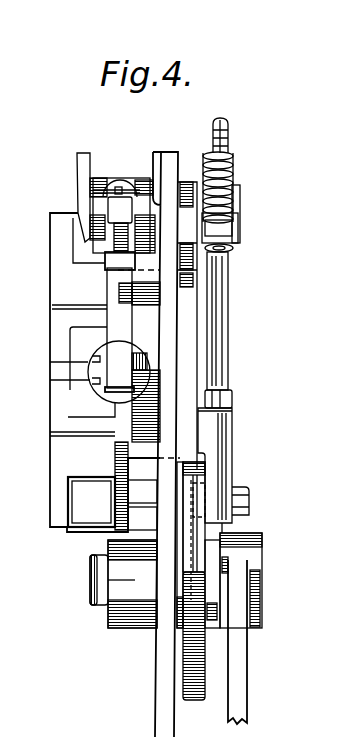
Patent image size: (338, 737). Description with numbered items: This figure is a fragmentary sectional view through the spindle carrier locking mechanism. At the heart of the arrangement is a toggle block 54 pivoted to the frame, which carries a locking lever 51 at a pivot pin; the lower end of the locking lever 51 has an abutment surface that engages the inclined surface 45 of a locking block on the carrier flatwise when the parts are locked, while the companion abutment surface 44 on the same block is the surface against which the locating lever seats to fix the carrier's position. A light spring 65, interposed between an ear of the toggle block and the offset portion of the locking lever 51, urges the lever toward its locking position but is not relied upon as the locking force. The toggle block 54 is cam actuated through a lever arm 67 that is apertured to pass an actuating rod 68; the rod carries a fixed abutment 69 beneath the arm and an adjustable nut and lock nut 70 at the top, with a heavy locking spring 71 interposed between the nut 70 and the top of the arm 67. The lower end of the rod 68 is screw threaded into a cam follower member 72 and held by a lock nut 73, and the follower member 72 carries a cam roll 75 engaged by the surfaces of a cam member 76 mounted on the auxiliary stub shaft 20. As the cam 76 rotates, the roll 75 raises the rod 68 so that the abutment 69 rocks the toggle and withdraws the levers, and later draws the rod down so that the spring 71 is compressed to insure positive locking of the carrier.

The auxiliary stub shaft 20 is at (100, 573).
The abutment surface 44 is at (97, 361).
The inclined surface 45 is at (95, 381).
The locking lever 51 is at (120, 323).
The toggle block 54 is at (140, 188).
The spring 65 is at (112, 240).
The lever arm 67 is at (238, 232).
The actuating rod 68 is at (228, 296).
The fixed abutment 69 is at (238, 248).
The nut and lock nut 70 is at (232, 131).
The heavy spring 71 is at (235, 176).
The cam follower member 72 is at (222, 433).
The lock nut 73 is at (227, 403).
The cam roll 75 is at (233, 482).
The cam member 76 is at (190, 655).